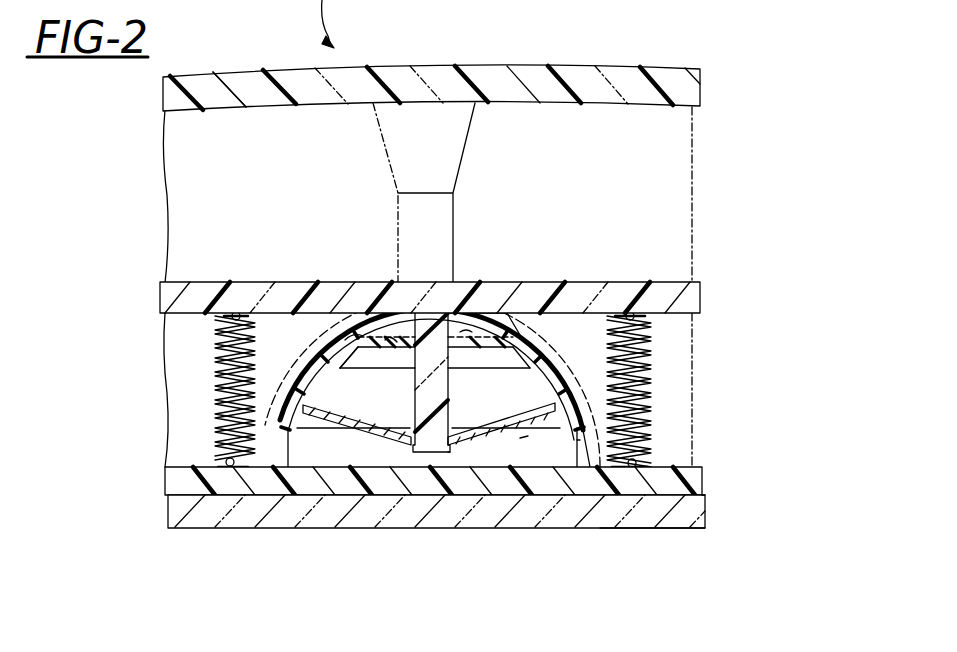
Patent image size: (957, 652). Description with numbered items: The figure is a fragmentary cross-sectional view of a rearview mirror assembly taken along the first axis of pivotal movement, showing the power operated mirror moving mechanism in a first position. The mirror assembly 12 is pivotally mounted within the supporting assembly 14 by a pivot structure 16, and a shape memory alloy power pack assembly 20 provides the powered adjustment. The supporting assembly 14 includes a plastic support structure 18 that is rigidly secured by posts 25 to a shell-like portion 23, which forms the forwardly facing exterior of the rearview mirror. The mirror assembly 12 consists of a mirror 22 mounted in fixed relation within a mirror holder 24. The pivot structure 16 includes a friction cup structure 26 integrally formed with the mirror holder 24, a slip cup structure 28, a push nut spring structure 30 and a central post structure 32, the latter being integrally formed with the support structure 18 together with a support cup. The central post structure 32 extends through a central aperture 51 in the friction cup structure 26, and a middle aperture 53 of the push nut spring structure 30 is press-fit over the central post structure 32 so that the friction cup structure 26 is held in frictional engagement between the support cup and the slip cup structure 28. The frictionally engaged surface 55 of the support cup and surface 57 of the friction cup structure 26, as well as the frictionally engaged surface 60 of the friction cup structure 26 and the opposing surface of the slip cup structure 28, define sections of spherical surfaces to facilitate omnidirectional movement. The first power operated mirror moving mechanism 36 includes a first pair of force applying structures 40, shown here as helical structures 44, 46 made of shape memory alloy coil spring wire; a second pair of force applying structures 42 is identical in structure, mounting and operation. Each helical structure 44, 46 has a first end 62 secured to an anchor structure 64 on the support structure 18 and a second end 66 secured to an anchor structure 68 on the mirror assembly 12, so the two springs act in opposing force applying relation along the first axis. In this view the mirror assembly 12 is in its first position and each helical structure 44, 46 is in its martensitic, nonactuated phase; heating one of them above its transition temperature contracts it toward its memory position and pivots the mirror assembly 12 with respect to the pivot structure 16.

The mirror assembly 12 is at (706, 515).
The supporting assembly 14 is at (548, 67).
The pivot structure 16 is at (303, 325).
The support structure 18 is at (523, 283).
The shape memory alloy power pack assembly 20 is at (205, 371).
The mirror 22 is at (175, 513).
The shell-like portion 23 is at (240, 76).
The mirror holder 24 is at (165, 473).
The posts 25 is at (453, 202).
The friction cup structure 26 is at (392, 340).
The slip cup structure 28 is at (323, 407).
The push nut spring structure 30 is at (523, 440).
The central post structure 32 is at (445, 385).
The first power operated mirror moving mechanism 36 is at (672, 350).
The first pair of force applying structures 40 is at (672, 370).
The second pair of force applying structures 42 is at (652, 590).
The helical structure 44 is at (225, 420).
The helical structure 46 is at (650, 403).
The central aperture 51 is at (466, 330).
The middle aperture 53 is at (473, 448).
The frictionally engaged surface 55 is at (352, 340).
The frictionally engaged surface 57 is at (363, 342).
The frictionally engaged surface 60 is at (578, 440).
The first end 62 is at (239, 318).
The anchor structure 64 is at (228, 318).
The second end 66 is at (243, 470).
The anchor structure 68 is at (220, 477).